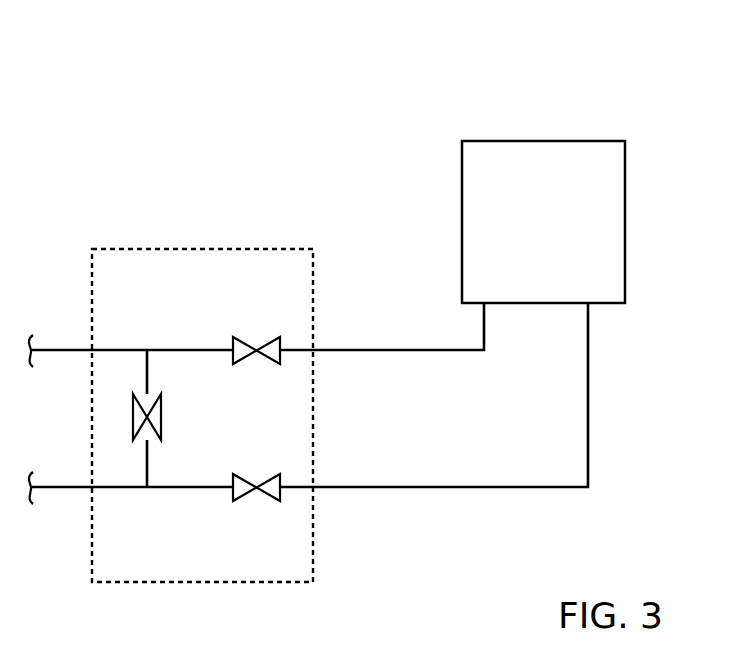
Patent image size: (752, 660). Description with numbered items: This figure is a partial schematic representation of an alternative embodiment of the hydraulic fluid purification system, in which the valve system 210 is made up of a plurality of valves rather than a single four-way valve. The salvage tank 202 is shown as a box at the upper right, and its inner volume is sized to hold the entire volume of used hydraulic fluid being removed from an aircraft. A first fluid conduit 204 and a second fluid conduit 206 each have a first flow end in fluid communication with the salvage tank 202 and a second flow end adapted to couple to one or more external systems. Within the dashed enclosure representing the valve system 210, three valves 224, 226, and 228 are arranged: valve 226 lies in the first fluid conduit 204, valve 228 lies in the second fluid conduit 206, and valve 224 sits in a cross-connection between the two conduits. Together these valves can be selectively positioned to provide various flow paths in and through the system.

The salvage tank 202 is at (462, 172).
The first fluid conduit 204 is at (460, 350).
The second fluid conduit 206 is at (532, 489).
The valve system 210 is at (163, 248).
The valve 224 is at (152, 418).
The valve 226 is at (272, 342).
The valve 228 is at (267, 494).